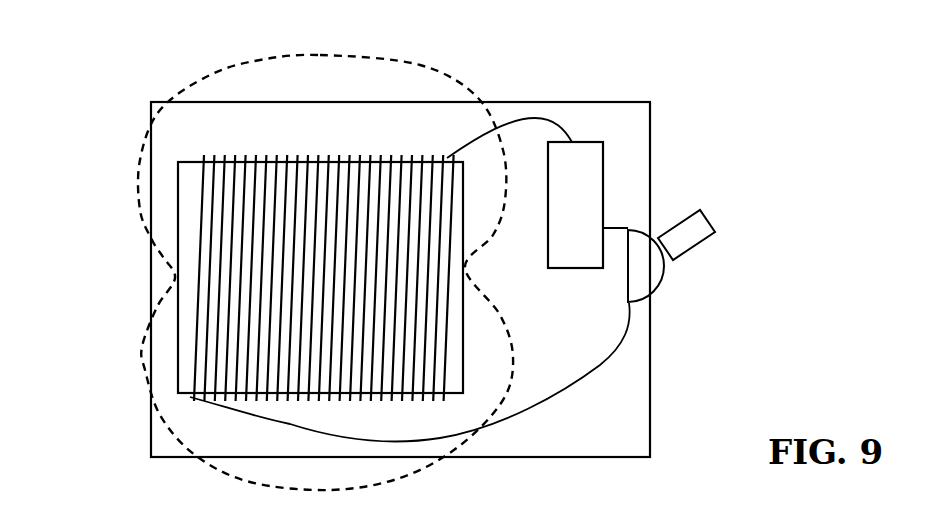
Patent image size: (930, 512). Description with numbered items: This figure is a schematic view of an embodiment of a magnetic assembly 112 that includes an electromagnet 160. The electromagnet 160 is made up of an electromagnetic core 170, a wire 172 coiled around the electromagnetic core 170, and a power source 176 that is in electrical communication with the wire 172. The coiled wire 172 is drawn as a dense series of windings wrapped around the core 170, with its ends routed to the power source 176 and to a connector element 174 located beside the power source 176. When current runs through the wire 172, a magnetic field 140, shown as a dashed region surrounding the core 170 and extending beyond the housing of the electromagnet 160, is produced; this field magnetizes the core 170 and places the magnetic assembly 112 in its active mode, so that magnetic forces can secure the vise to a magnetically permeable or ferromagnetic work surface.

The magnetic assembly 112 is at (670, 92).
The magnetic field 140 is at (428, 80).
The electromagnet 160 is at (500, 98).
The electromagnetic core 170 is at (241, 204).
The wire 172 is at (237, 157).
The connector 174 is at (680, 245).
The power source 176 is at (575, 183).